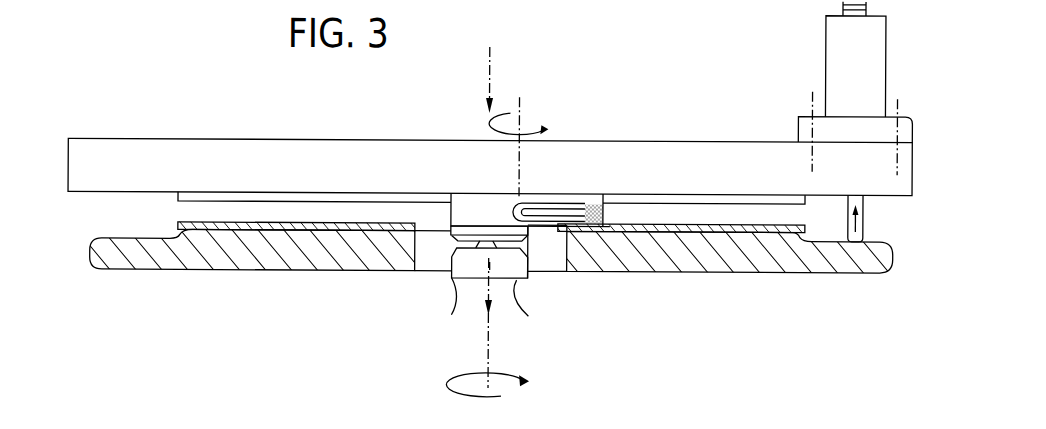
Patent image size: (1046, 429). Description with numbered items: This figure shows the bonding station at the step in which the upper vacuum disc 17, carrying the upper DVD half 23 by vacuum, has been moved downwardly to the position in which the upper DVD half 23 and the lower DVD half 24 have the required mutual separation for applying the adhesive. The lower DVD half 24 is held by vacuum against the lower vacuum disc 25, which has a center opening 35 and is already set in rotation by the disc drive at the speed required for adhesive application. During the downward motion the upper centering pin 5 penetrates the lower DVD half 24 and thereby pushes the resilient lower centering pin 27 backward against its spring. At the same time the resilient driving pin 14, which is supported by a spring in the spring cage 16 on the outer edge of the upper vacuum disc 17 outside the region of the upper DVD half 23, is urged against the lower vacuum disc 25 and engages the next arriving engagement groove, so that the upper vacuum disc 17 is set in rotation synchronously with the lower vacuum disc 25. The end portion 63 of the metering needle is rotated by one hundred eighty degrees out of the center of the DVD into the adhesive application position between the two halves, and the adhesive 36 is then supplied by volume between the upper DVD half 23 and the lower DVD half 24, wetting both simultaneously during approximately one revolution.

The upper centering pin 5 is at (468, 212).
The end portion of the metering needle 63 is at (558, 196).
The adhesive 36 is at (600, 197).
The upper vacuum disc 17 is at (663, 168).
The upper DVD half 23 is at (738, 197).
The spring cage 16 is at (837, 45).
The driving pin 14 is at (865, 218).
The center opening 35 is at (423, 268).
The lower centering pin 27 is at (520, 297).
The lower vacuum disc 25 is at (640, 257).
The lower DVD half 24 is at (728, 227).